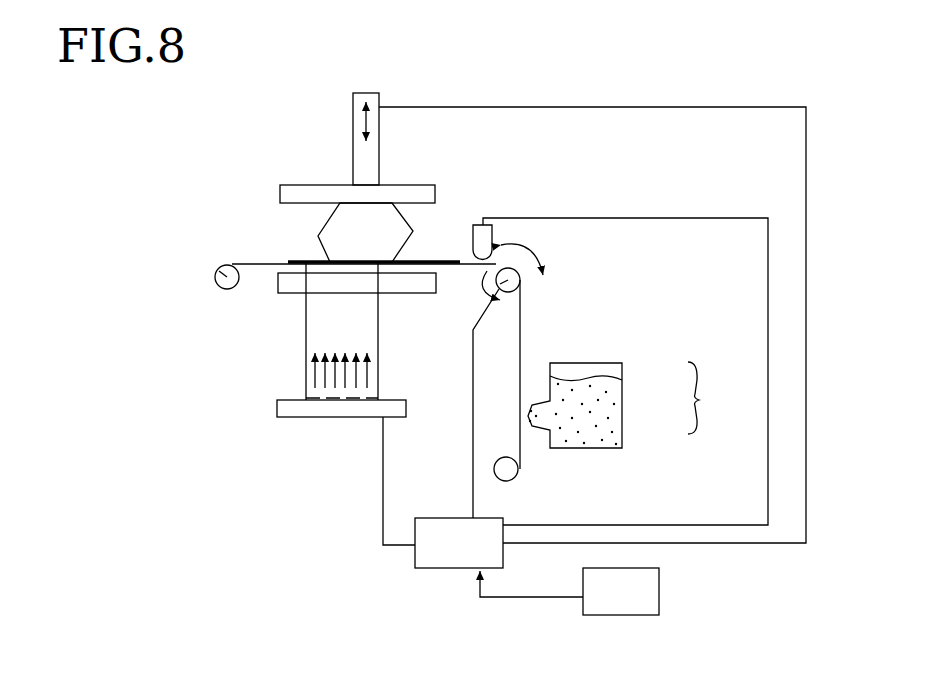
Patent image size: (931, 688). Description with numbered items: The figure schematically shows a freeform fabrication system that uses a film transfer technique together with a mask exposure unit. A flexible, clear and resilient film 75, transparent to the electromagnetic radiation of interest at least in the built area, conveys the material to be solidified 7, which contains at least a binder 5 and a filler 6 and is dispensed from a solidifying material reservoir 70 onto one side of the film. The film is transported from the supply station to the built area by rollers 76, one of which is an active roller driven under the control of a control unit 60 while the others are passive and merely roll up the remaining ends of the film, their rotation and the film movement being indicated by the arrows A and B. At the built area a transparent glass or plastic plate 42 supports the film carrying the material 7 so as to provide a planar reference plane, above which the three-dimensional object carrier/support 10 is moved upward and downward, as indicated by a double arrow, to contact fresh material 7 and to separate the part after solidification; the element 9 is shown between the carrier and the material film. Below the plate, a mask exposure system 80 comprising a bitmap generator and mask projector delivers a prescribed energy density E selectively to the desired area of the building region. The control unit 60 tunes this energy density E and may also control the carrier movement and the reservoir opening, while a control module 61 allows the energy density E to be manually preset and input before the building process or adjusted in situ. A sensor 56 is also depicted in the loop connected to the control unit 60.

The three-dimensional object carrier/support 10 is at (420, 188).
The pressing die / heating element 9 is at (365, 232).
The material to be solidified 7 is at (303, 257).
The rollers 76 is at (568, 280).
The transparent glass or plastic plate 42 is at (417, 283).
The mask exposure system 80 is at (278, 413).
The control unit 60 is at (459, 543).
The control module 61 is at (569, 591).
The sensor 56 is at (477, 232).
The flexible film 75 is at (521, 345).
The solidifying material reservoir 70 is at (622, 381).
The binder 5 is at (618, 388).
The filler 6 is at (612, 422).
The energy density E is at (341, 349).
The rotation direction A is at (496, 307).
The movement direction B is at (525, 253).